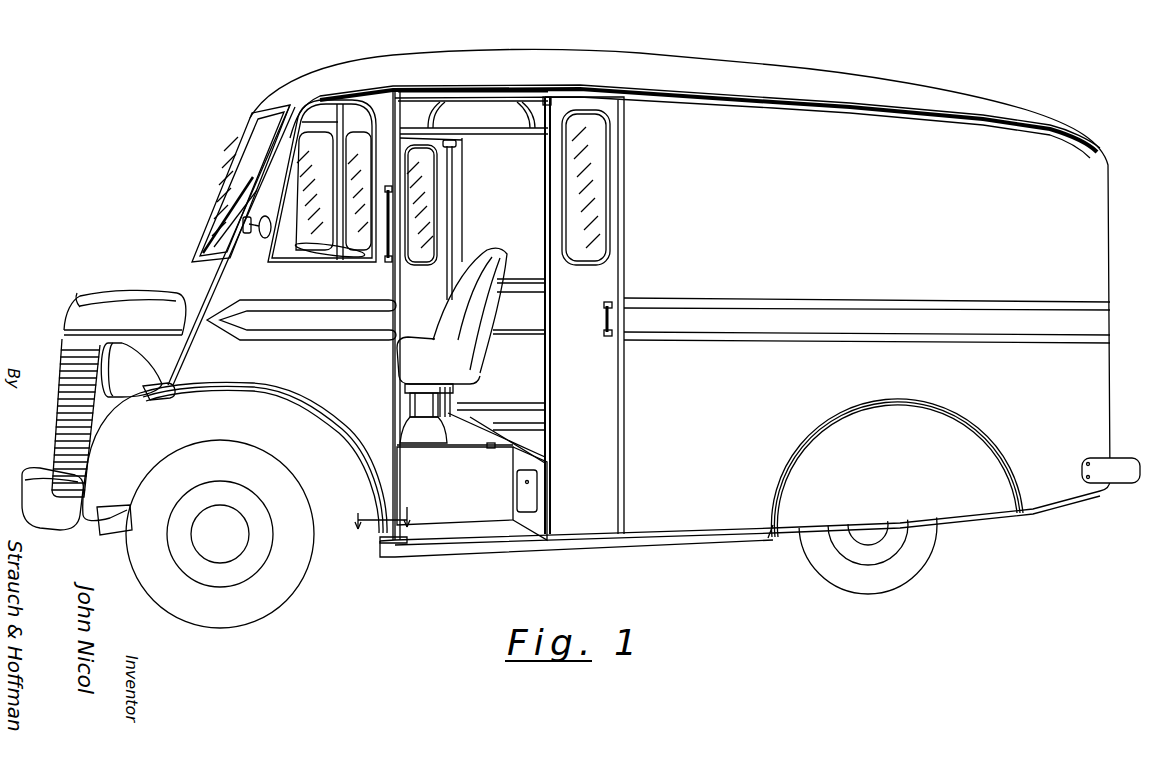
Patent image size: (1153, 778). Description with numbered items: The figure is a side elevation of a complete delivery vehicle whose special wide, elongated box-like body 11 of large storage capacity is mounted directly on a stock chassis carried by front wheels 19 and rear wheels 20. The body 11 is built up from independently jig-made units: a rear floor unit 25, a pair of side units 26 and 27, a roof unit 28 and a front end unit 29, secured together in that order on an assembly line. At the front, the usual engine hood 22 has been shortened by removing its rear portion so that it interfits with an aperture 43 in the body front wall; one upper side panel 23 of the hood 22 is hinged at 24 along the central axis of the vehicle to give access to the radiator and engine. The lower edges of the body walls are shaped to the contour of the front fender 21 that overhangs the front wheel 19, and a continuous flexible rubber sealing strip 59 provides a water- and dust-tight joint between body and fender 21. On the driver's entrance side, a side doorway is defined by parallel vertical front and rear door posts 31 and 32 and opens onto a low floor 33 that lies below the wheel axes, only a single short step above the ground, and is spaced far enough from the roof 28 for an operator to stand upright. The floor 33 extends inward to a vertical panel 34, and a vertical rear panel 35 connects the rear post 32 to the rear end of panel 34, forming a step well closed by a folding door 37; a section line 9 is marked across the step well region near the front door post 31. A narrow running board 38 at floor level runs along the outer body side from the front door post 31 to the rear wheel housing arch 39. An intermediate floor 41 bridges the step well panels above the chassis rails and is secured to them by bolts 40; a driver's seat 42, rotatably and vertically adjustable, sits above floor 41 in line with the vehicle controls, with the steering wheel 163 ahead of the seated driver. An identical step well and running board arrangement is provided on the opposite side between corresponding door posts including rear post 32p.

The body 11 is at (849, 88).
The roof unit 28 is at (707, 72).
The side unit 27 is at (752, 217).
The side unit 26 is at (524, 231).
The front end unit 29 is at (212, 270).
The aperture 43 is at (185, 314).
The upper side panel 23 is at (112, 308).
The hinge 24 is at (160, 294).
The engine hood 22 is at (65, 321).
The steering wheel 163 is at (356, 262).
The sealing strip 59 is at (297, 408).
The front fender 21 is at (226, 433).
The front wheel 19 is at (238, 614).
The rear door post 32p is at (455, 183).
The rear door post 32 is at (546, 398).
The driver's seat 42 is at (488, 347).
The intermediate floor 41 is at (465, 439).
The rear floor unit 25 is at (530, 425).
The vertical panel 34 is at (502, 491).
The vertical rear panel 35 is at (538, 470).
The bolts 40 is at (488, 450).
The front door post 31 is at (398, 493).
The section line 9- 9 is at (379, 524).
The folding door 37 is at (602, 436).
The low floor 33 is at (476, 532).
The running board 38 is at (640, 540).
The rear wheel housing arch 39 is at (773, 516).
The rear wheel 20 is at (925, 553).